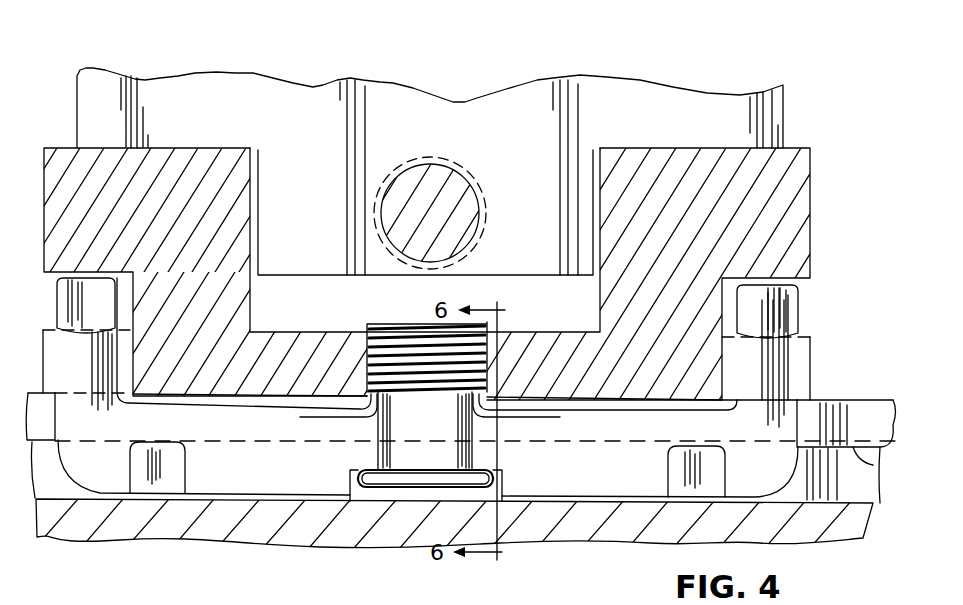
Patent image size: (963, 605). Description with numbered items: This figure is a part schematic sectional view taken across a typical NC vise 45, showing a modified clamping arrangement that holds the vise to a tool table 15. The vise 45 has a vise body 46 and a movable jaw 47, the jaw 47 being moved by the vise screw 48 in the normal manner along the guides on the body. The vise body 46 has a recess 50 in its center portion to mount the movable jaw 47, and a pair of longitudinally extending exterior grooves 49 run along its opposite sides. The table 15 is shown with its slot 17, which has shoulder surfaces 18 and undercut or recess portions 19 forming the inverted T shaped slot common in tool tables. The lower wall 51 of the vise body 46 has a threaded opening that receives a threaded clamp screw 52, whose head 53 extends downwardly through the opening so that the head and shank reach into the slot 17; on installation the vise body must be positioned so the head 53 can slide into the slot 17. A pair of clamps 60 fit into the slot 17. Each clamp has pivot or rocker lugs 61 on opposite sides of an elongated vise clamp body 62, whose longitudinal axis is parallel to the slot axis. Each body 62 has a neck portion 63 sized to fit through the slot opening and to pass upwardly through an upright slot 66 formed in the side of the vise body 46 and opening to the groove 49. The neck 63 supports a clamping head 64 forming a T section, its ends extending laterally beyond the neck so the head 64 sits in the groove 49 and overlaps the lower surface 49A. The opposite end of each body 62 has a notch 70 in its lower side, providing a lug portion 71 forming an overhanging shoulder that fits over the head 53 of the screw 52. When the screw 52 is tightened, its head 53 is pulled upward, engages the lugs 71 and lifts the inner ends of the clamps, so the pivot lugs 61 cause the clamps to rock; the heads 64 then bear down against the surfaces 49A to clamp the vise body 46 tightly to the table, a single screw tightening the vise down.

The table 15 is at (872, 400).
The slot 17 is at (872, 427).
The shoulder surfaces 18 is at (875, 464).
The undercut or recess portions 19 is at (853, 482).
The vise 45 is at (842, 163).
The vise body 46 is at (803, 242).
The movable jaw 47 is at (553, 80).
The vise screw 48 is at (417, 180).
The exterior grooves 49 is at (127, 283).
The lower surface of the slot 49A is at (125, 320).
The recess 50 is at (277, 280).
The lower wall 51 is at (267, 350).
The clamp screw 52 is at (447, 371).
The head 53 is at (415, 486).
The clamps 60 is at (684, 420).
The pivot or rocker lugs 61 is at (143, 477).
The vise clamp body 62 is at (592, 398).
The neck portion 63 is at (95, 370).
The clamping head 64 is at (118, 300).
The upright slot 66 is at (127, 353).
The notch 70 is at (348, 486).
The lug portion 71 is at (352, 442).